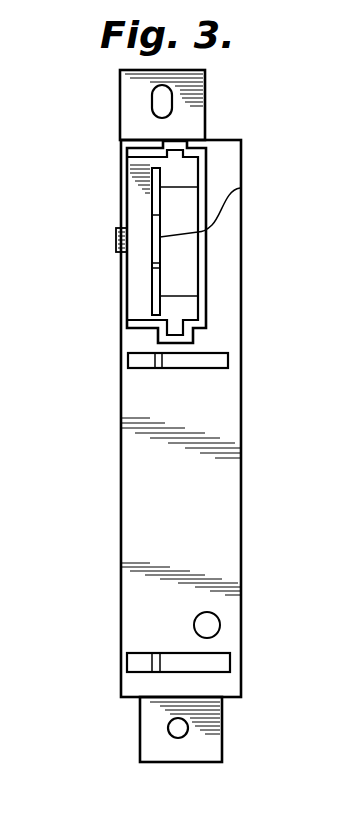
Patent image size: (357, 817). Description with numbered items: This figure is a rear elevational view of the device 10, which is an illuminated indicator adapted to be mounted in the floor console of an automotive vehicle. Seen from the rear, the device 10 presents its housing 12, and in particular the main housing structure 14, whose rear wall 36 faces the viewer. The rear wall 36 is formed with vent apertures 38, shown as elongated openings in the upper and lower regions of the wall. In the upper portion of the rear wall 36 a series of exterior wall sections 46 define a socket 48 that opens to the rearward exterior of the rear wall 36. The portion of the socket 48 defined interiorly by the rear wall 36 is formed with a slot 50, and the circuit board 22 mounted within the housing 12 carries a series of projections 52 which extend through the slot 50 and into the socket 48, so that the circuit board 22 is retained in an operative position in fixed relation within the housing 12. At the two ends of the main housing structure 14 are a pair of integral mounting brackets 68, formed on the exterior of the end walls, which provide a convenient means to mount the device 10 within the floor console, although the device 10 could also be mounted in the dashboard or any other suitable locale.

The device 10 is at (268, 93).
The housing 12 is at (115, 580).
The main housing structure 14 is at (121, 381).
The circuit board 22 is at (146, 285).
The rear wall 36 is at (131, 493).
The vent apertures 38 is at (181, 367).
The exterior wall sections 46 is at (198, 226).
The socket 48 is at (138, 172).
The slot 50 is at (160, 248).
The projections 52 is at (198, 187).
The mounting brackets 68 is at (126, 88).